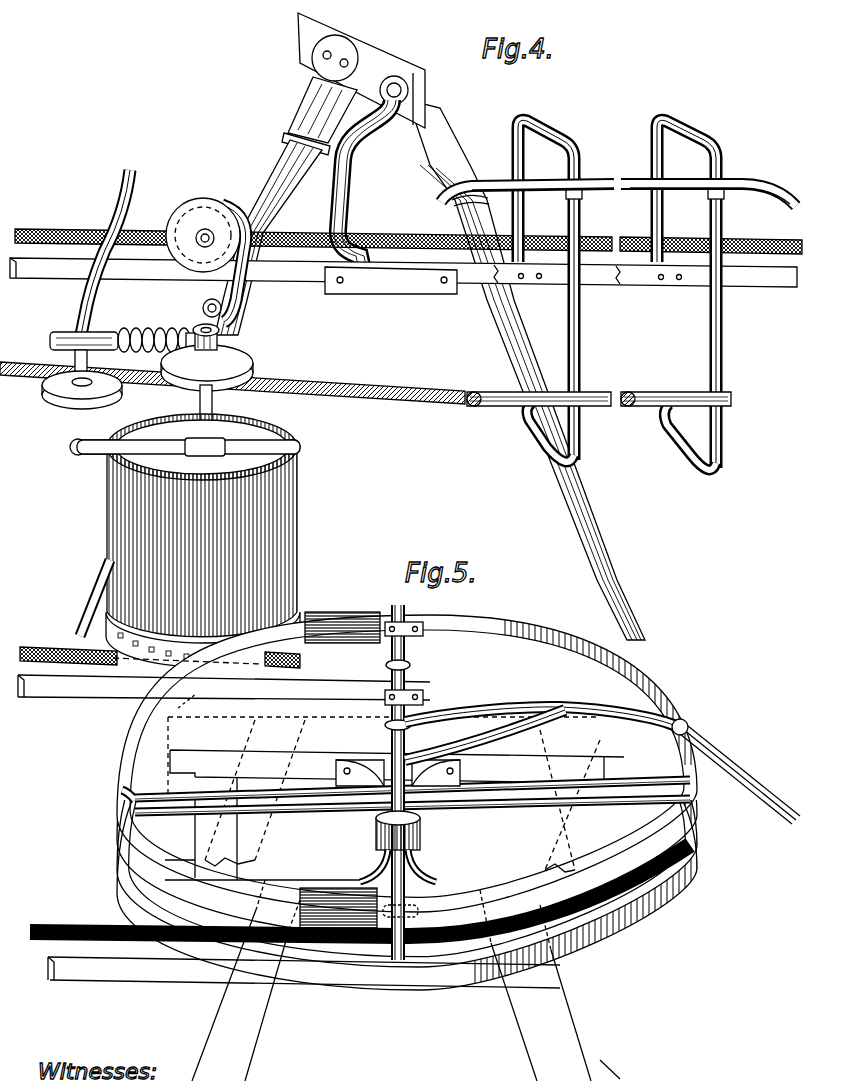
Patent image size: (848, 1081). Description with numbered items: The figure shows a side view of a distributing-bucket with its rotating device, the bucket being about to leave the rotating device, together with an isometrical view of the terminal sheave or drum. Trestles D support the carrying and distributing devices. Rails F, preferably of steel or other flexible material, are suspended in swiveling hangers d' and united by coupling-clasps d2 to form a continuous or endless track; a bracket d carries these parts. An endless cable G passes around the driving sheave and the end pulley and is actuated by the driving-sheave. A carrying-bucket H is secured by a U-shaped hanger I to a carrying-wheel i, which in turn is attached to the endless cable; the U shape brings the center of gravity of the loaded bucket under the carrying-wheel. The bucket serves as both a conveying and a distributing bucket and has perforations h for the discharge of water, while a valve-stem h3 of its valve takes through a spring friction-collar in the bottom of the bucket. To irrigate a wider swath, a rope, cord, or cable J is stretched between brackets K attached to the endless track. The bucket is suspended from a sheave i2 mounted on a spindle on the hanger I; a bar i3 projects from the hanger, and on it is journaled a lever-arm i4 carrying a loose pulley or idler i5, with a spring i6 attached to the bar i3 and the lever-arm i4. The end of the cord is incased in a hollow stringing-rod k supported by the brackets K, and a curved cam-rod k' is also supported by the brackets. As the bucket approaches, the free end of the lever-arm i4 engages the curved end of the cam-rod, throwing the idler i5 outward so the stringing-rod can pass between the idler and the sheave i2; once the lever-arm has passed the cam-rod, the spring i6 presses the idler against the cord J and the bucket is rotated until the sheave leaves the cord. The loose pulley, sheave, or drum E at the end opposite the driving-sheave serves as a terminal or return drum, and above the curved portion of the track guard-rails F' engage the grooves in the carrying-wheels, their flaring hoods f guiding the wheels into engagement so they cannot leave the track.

In FIG. 4, the bracket d is at (361, 70).
In FIG. 4, the trestle D is at (286, 202).
In FIG. 4, the swiveling hanger d' is at (365, 185).
In FIG. 4, the coupling-clasp d2 is at (391, 281).
In FIG. 4, the endless cable G is at (408, 234).
In FIG. 5, the endless cable G is at (355, 778).
In FIG. 4, the rail F is at (403, 282).
In FIG. 5, the rail F is at (289, 840).
In FIG. 4, the bracket K is at (632, 295).
In FIG. 4, the cam-rod k' is at (618, 179).
In FIG. 4, the stringing-rod k is at (599, 386).
In FIG. 4, the cord J is at (232, 383).
In FIG. 5, the cord J is at (612, 1070).
In FIG. 4, the carrying-wheel i is at (206, 260).
In FIG. 4, the lever-arm i4 is at (115, 255).
In FIG. 4, the bar i3 is at (77, 349).
In FIG. 4, the spring i6 is at (128, 333).
In FIG. 4, the idler i5 is at (82, 390).
In FIG. 4, the sheave i2 is at (215, 357).
In FIG. 4, the hanger I is at (210, 296).
In FIG. 4, the carrying-bucket H is at (188, 540).
In FIG. 4, the perforation h is at (196, 660).
In FIG. 5, the terminal drum E is at (394, 802).
In FIG. 5, the guard-rail F' is at (602, 713).
In FIG. 5, the flaring hood f is at (350, 608).
In FIG. 5, the valve-stem h3 is at (163, 709).